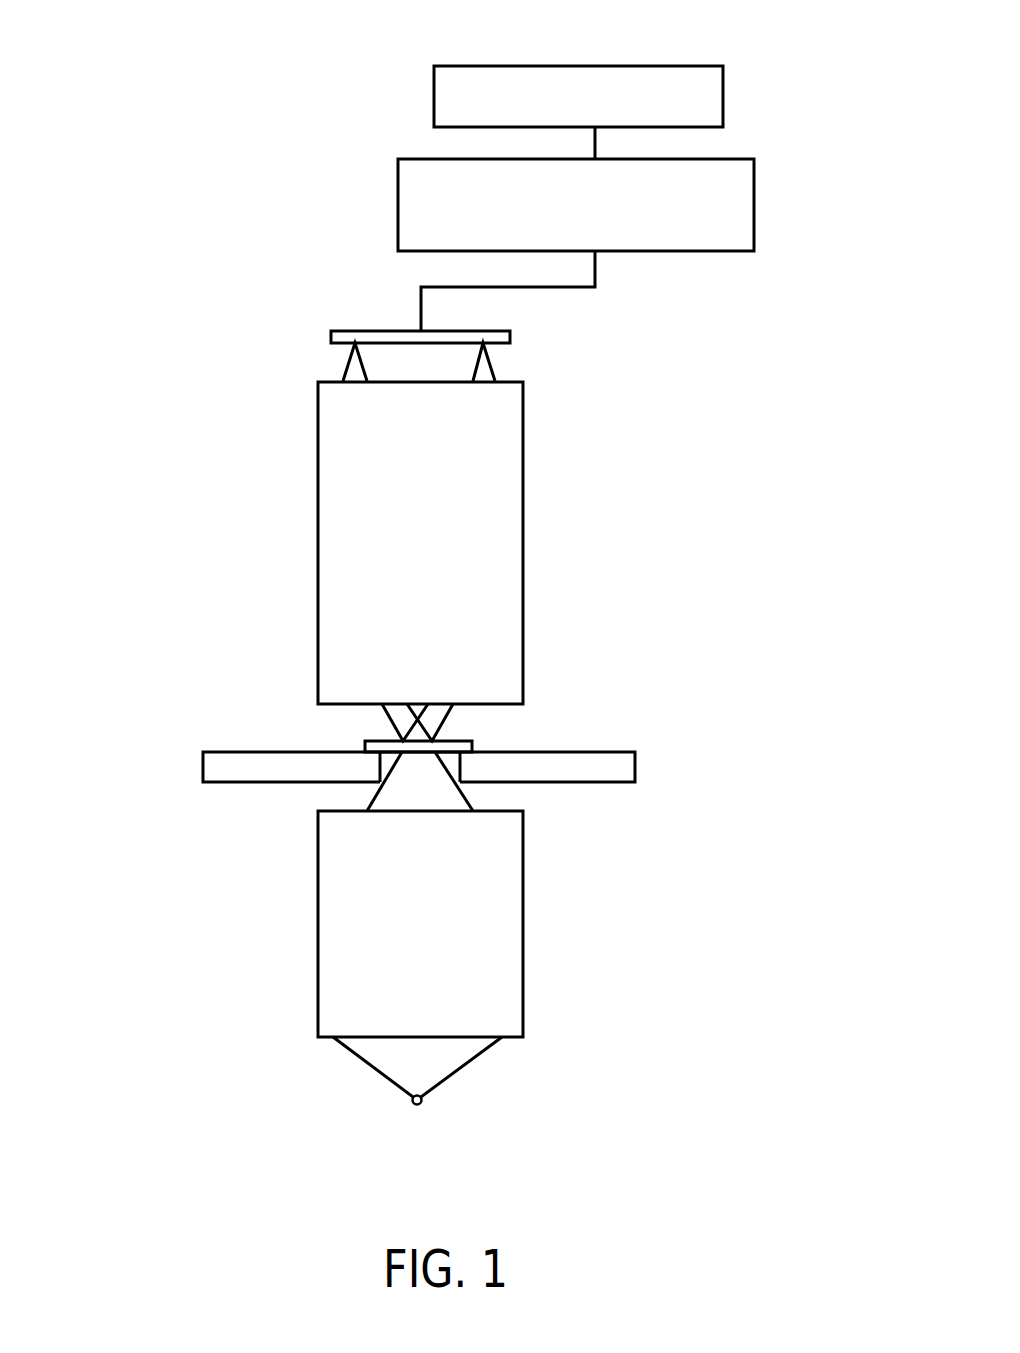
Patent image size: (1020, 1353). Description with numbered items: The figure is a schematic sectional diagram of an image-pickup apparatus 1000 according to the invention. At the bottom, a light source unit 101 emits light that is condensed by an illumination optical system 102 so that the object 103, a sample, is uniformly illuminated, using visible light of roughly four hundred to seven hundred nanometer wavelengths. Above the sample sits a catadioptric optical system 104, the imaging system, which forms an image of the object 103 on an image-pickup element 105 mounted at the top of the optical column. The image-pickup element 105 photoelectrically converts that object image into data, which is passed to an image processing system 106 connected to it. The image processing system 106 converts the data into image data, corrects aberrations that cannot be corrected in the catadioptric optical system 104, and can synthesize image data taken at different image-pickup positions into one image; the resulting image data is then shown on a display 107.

The image-pickup apparatus 1000 is at (467, 47).
The light source unit 101 is at (422, 1103).
The illumination optical system 102 is at (518, 917).
The object 103 is at (360, 743).
The catadioptric optical system 104 is at (523, 523).
The image-pickup element 105 is at (367, 337).
The image processing system 106 is at (755, 210).
The display 107 is at (724, 93).